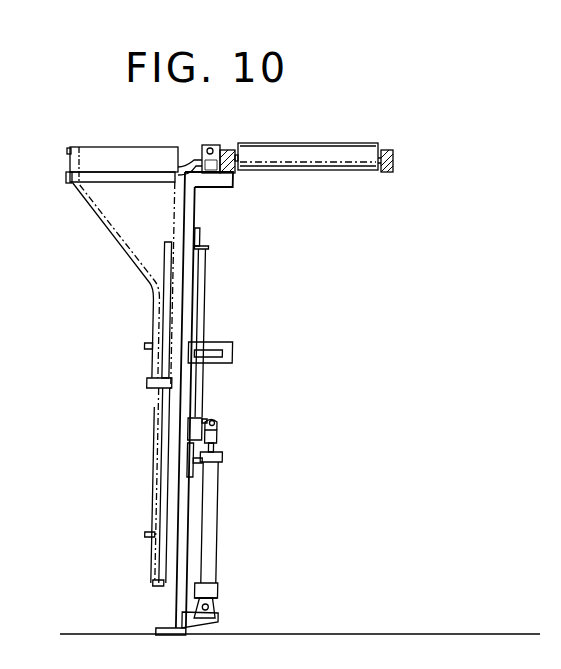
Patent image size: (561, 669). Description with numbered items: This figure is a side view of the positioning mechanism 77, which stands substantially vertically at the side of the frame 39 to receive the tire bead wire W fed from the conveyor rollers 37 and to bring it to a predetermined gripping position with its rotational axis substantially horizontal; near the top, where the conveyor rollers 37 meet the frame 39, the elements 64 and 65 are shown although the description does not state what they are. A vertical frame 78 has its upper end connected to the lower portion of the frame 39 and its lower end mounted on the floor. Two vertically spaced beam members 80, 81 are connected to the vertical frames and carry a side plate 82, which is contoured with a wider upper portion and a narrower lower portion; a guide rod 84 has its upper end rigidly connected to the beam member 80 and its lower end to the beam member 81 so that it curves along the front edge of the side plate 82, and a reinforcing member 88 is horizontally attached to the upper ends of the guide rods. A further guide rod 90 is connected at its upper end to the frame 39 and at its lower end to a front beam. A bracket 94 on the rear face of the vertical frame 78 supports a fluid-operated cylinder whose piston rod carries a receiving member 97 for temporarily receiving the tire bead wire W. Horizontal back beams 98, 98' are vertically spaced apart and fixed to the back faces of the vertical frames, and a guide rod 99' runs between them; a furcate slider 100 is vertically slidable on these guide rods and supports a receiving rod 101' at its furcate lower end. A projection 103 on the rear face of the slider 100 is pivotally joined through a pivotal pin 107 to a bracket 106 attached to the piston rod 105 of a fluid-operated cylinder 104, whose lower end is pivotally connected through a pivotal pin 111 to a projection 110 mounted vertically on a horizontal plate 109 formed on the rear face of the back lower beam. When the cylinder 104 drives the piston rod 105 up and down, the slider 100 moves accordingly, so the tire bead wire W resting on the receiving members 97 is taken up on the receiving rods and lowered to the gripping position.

The conveyor rollers 37 is at (370, 145).
The frame 39 is at (411, 163).
The bracket block 64 is at (208, 146).
The mounting block 65 is at (226, 150).
The positioning mechanism 77 is at (124, 318).
The vertical frame 78 is at (175, 606).
The beam member 80 is at (67, 177).
The beam member 81 is at (150, 379).
The side plate 82 is at (150, 160).
The guide rod 84 is at (87, 203).
The reinforcing member 88 is at (68, 150).
The guide rod 90 is at (153, 568).
The bracket 94 is at (218, 343).
The receiving member 97 is at (148, 346).
The upper back beam 98 is at (222, 230).
The lower back beam 98' is at (222, 476).
The guide rod 99' is at (226, 333).
The furcate slider 100 is at (198, 417).
The receiving rod 101' is at (122, 522).
The projection 103 is at (207, 421).
The fluid-operated cylinder 104 is at (216, 530).
The piston rod 105 is at (220, 453).
The bracket 106 is at (220, 437).
The pivotal pin 107 is at (220, 424).
The horizontal plate 109 is at (207, 622).
The projection 110 is at (215, 607).
The pivotal pin 111 is at (217, 598).
The tire bead wire W is at (327, 143).